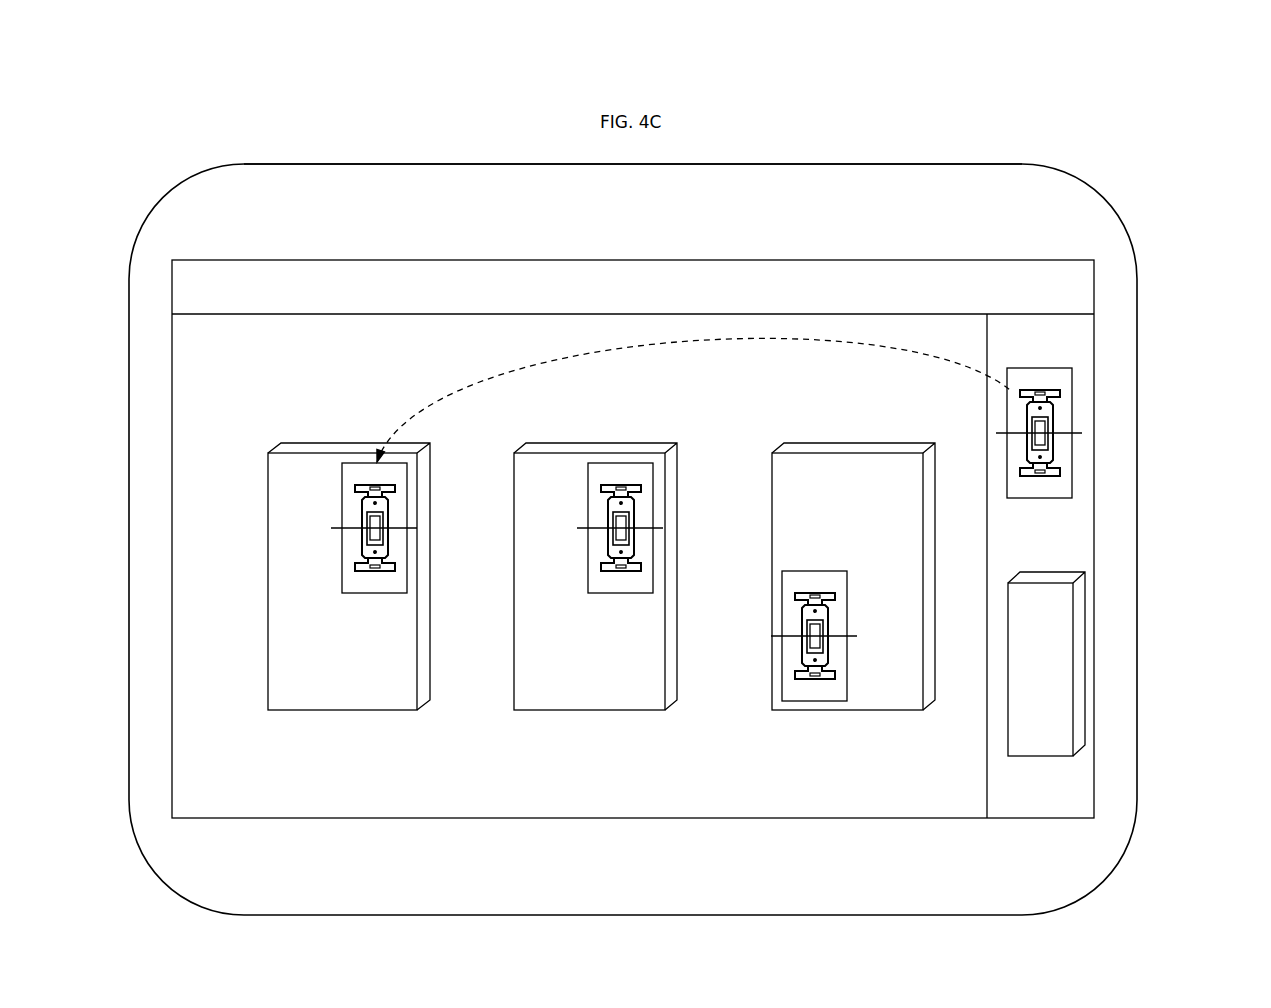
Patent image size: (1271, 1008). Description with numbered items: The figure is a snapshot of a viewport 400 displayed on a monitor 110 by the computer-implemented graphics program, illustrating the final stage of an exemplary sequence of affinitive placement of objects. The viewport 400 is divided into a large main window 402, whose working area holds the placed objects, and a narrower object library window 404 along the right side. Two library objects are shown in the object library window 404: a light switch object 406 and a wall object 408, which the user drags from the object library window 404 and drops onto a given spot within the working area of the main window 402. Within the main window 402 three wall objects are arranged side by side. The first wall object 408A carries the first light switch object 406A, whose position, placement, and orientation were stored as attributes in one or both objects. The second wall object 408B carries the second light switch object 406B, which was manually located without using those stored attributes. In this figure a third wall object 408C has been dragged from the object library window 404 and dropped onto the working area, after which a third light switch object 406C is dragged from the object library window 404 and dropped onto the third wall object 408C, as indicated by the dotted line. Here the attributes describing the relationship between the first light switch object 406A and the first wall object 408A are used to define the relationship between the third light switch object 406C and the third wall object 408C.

The viewport 400 is at (330, 240).
The monitor 110 is at (803, 163).
The main window 402 is at (837, 314).
The object library window 404 is at (1094, 348).
The light switch object 406 is at (1073, 433).
The first light switch object 406A is at (590, 528).
The second light switch object 406B is at (782, 635).
The third light switch object 406C is at (343, 528).
The wall object 408 is at (1085, 657).
The first wall object 408A is at (514, 585).
The second wall object 408B is at (772, 580).
The third wall object 408C is at (268, 580).